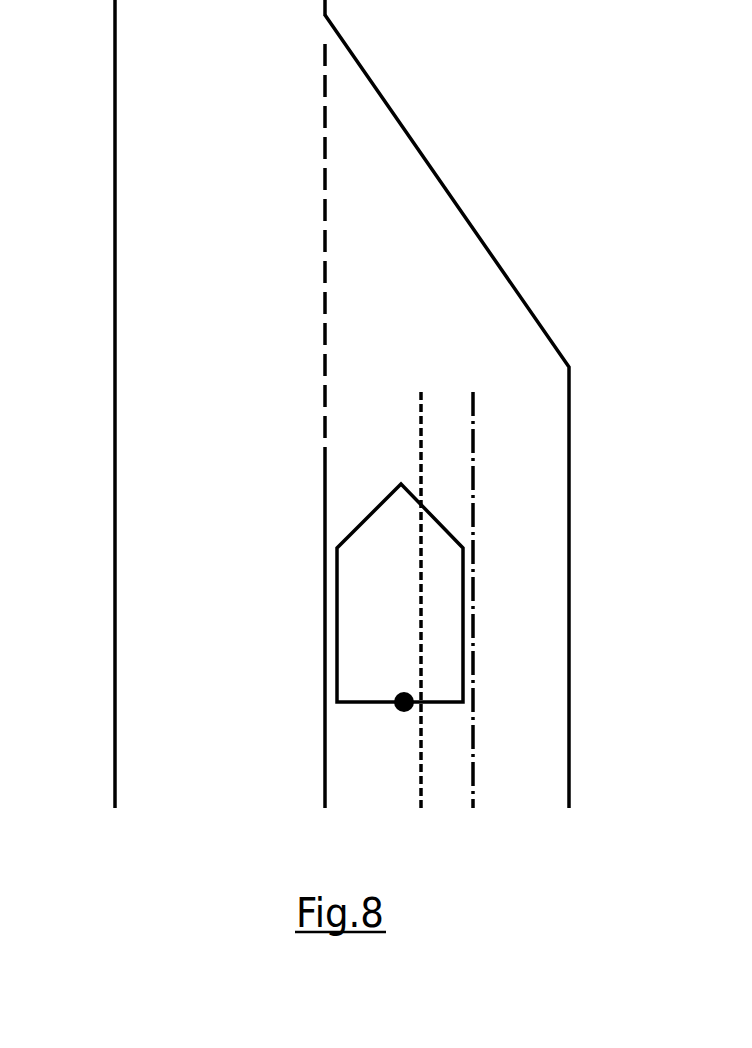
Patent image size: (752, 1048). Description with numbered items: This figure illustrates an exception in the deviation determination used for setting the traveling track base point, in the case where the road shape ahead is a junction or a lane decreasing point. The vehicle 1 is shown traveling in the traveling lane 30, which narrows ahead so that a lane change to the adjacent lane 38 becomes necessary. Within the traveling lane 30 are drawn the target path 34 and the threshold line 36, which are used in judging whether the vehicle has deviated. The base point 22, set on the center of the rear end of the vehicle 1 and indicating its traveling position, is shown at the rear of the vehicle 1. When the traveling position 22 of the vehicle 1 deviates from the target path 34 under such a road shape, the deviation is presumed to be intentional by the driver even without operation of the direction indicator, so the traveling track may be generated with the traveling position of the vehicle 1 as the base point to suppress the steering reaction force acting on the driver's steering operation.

The adjacent lane 38 is at (163, 347).
The traveling lane 30 is at (490, 320).
The threshold line 36 is at (418, 457).
The target path 34 is at (472, 723).
The vehicle 1 is at (463, 623).
The base point 22 is at (396, 711).